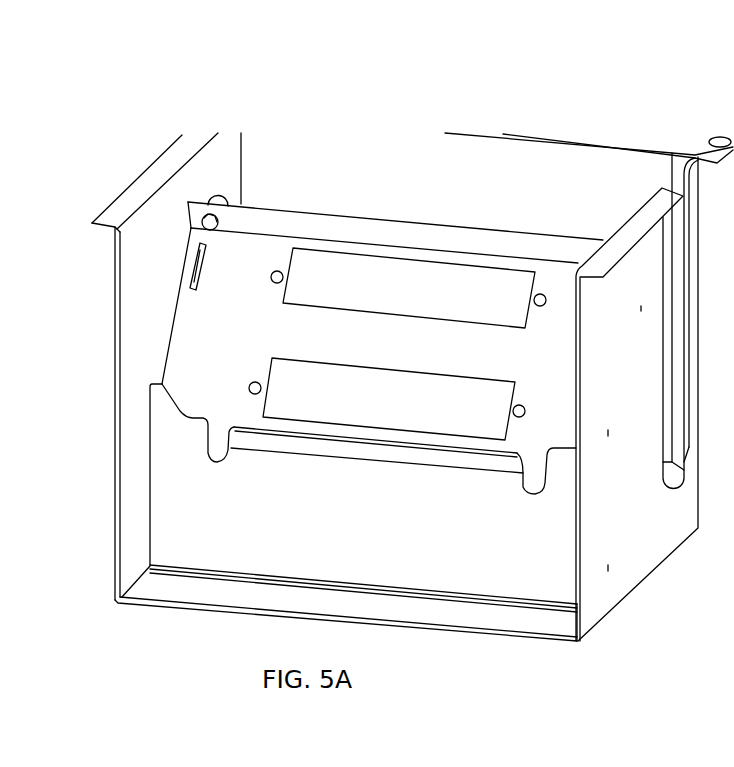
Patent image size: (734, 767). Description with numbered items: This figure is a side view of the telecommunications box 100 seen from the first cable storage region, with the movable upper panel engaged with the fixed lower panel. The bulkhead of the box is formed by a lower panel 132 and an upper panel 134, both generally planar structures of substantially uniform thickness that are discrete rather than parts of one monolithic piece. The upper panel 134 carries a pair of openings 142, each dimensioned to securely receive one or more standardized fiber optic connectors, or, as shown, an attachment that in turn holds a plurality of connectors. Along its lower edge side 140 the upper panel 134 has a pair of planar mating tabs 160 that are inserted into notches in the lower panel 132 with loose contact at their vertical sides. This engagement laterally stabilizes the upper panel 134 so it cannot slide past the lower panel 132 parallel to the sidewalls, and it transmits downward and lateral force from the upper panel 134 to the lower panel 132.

The telecommunications box 100 is at (339, 120).
The lower panel 132 is at (422, 543).
The upper panel 134 is at (439, 373).
The lower edge side 140 is at (219, 463).
The openings 142 is at (283, 291).
The planar mating tabs 160 is at (209, 463).